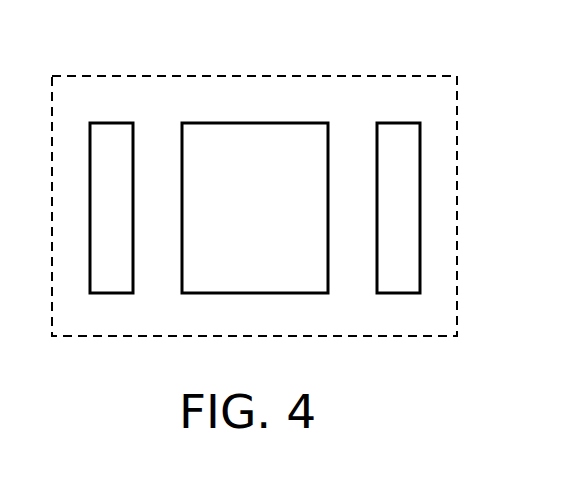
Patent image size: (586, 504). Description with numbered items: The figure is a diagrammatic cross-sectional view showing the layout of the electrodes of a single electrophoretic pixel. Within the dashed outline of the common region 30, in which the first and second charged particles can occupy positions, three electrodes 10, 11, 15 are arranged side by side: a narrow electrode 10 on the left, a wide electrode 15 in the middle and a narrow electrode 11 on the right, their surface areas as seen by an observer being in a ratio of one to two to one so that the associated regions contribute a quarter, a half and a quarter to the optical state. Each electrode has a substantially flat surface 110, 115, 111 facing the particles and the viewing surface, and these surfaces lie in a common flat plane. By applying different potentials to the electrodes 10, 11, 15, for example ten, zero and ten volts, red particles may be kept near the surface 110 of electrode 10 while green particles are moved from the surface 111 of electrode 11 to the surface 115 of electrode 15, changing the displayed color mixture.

The common region 30 is at (458, 147).
The electrode 10 is at (110, 273).
The electrode 15 is at (258, 270).
The electrode 11 is at (399, 270).
The surface of electrode 110 is at (111, 145).
The surface of electrode 115 is at (248, 145).
The surface of electrode 111 is at (396, 145).